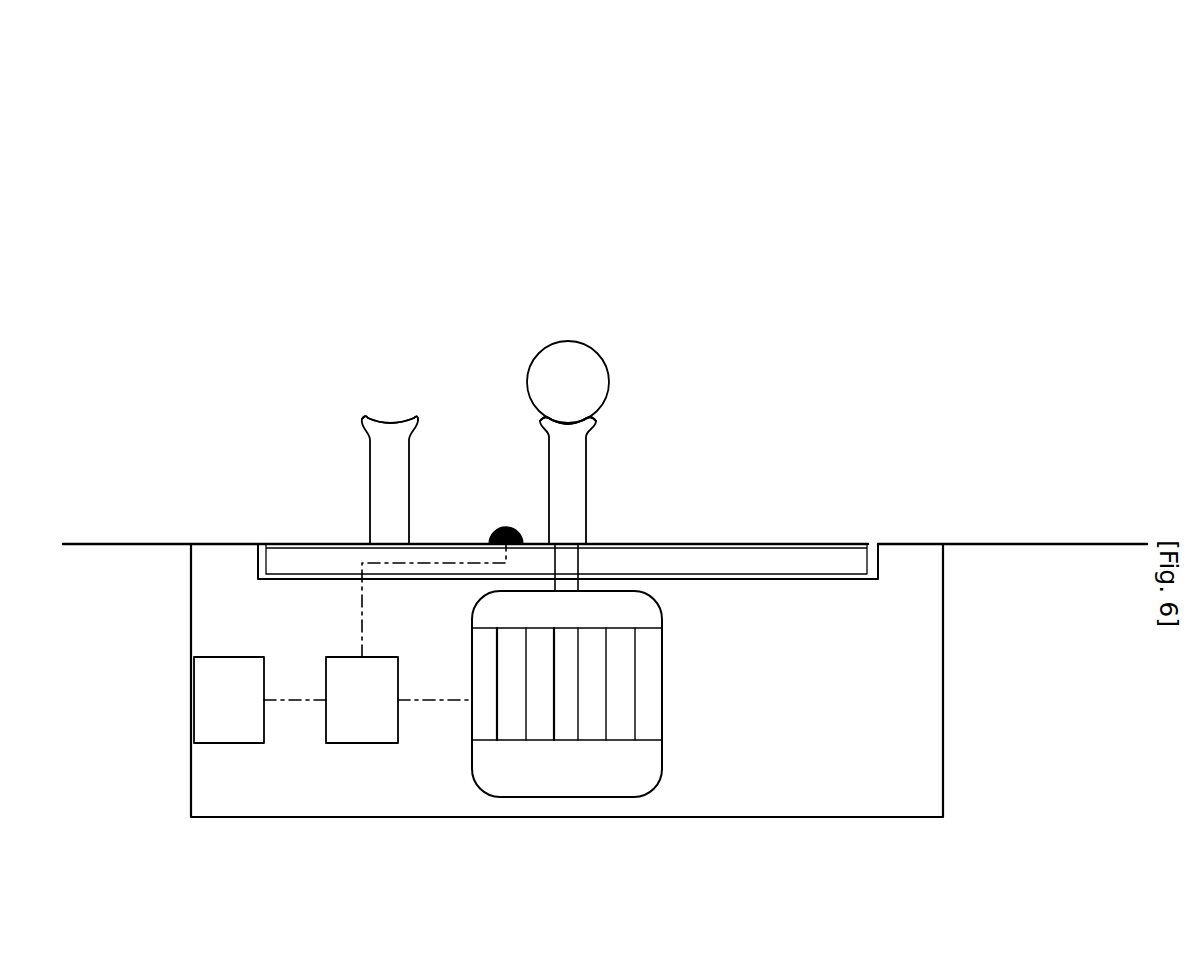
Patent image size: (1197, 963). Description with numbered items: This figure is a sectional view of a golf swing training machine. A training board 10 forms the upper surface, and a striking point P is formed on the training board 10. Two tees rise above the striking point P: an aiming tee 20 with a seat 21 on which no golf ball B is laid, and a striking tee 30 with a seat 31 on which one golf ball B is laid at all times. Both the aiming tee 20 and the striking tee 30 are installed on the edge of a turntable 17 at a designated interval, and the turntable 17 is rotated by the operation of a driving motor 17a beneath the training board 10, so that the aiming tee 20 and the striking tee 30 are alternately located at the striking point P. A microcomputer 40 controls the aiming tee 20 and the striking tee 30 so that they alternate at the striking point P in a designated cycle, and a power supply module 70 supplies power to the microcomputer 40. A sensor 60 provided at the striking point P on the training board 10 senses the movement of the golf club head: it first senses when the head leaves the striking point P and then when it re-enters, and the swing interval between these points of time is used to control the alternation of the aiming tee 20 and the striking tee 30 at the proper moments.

The striking point P is at (503, 345).
The training board 10 is at (917, 544).
The turntable 17 is at (773, 558).
The driving motor 17a is at (615, 763).
The aiming tee 20 is at (387, 485).
The seat 21 is at (397, 423).
The striking tee 30 is at (580, 473).
The seat 31 is at (605, 402).
The microcomputer 40 is at (355, 727).
The sensor 60 is at (507, 528).
The power supply module 70 is at (227, 727).
The golf ball B is at (590, 372).